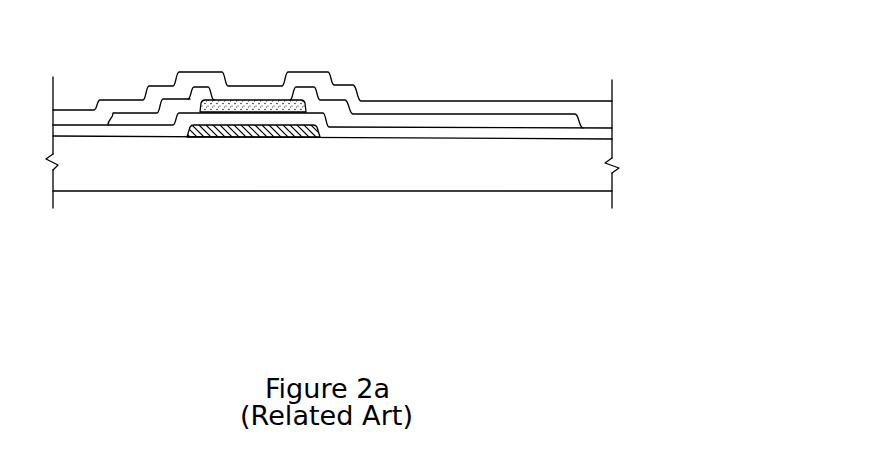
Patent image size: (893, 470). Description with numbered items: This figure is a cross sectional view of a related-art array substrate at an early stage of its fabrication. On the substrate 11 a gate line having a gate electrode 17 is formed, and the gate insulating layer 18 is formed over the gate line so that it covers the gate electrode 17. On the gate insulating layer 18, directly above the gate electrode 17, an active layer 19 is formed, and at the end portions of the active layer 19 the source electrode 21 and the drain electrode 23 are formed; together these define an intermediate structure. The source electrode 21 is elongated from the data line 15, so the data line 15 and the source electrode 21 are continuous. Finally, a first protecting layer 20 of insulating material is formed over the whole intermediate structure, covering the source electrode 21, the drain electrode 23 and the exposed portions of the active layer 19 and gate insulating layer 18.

The substrate 11 is at (532, 235).
The data line 15 is at (125, 118).
The gate electrode 17 is at (267, 138).
The gate insulating layer 18 is at (493, 137).
The active layer 19 is at (258, 98).
The first protecting layer 20 is at (402, 108).
The source electrode 21 is at (202, 90).
The drain electrode 23 is at (335, 110).